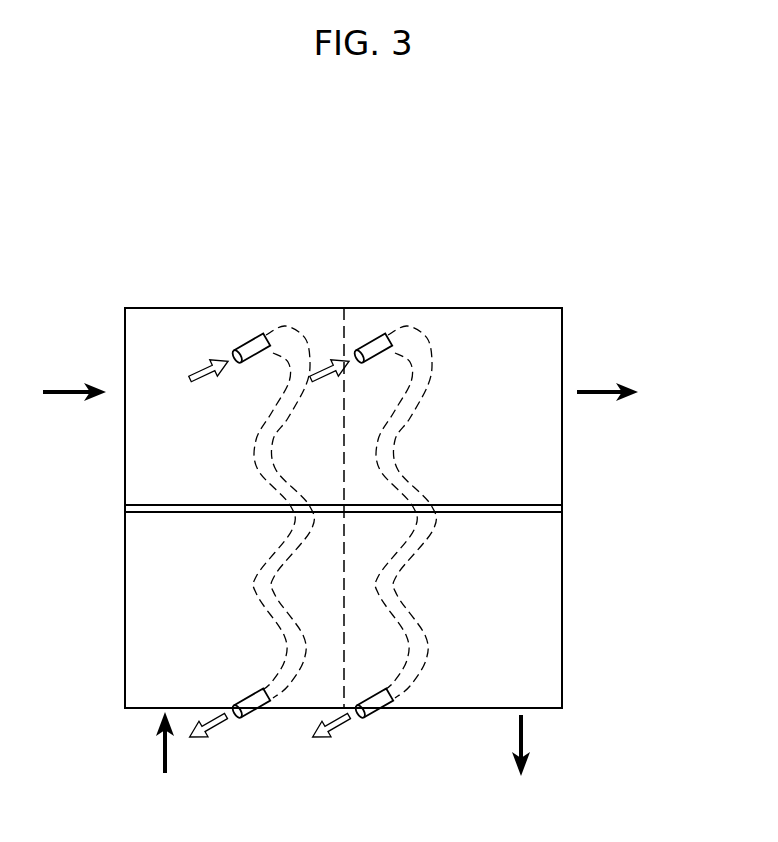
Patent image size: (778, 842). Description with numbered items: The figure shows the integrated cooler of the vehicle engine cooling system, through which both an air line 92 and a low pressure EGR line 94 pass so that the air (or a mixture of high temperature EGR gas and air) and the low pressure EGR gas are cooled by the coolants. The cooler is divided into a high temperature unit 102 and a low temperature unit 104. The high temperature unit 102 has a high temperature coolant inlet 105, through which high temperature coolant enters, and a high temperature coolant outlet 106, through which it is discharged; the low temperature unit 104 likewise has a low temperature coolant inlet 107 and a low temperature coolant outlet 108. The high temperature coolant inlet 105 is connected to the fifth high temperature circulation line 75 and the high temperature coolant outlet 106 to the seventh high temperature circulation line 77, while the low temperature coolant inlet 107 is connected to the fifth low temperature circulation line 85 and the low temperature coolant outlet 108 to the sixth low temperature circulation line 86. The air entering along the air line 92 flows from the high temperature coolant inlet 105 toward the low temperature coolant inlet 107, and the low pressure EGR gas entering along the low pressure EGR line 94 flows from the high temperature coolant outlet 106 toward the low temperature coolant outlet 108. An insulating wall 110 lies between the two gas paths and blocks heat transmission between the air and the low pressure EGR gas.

The fifth high temperature circulation line 75 is at (197, 370).
The seventh high temperature circulation line 77 is at (215, 729).
The fifth low temperature circulation line 85 is at (318, 372).
The sixth low temperature circulation line 86 is at (338, 729).
The air line 92 is at (64, 387).
The low pressure EGR line 94 is at (162, 752).
The high temperature unit 102 is at (245, 290).
The low temperature unit 104 is at (421, 292).
The high temperature coolant inlet 105 is at (251, 340).
The high temperature coolant outlet 106 is at (258, 718).
The low temperature coolant inlet 107 is at (367, 338).
The low temperature coolant outlet 108 is at (379, 718).
The insulating wall 110 is at (125, 509).